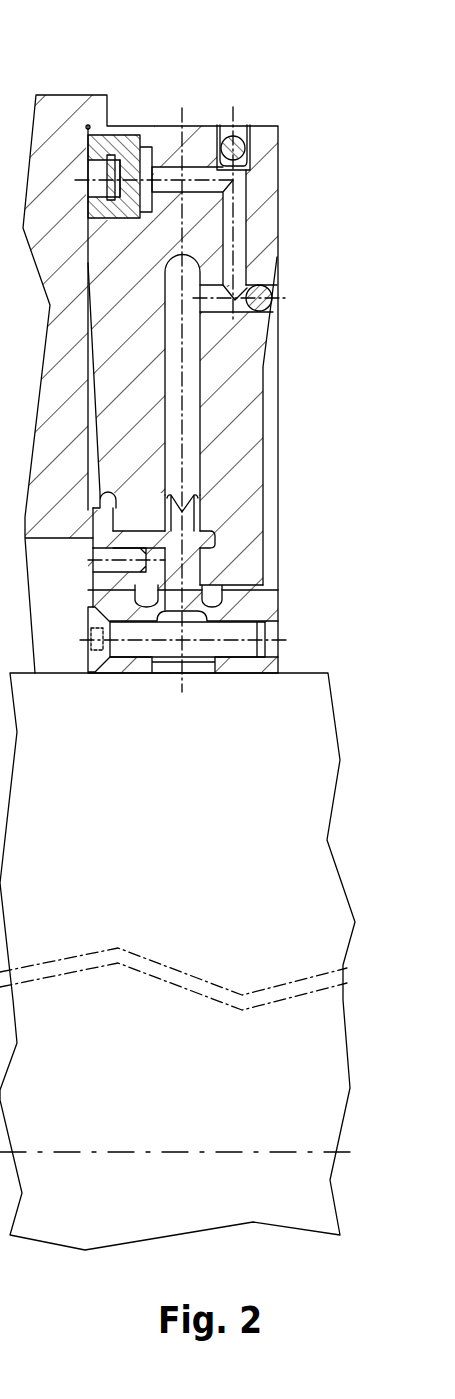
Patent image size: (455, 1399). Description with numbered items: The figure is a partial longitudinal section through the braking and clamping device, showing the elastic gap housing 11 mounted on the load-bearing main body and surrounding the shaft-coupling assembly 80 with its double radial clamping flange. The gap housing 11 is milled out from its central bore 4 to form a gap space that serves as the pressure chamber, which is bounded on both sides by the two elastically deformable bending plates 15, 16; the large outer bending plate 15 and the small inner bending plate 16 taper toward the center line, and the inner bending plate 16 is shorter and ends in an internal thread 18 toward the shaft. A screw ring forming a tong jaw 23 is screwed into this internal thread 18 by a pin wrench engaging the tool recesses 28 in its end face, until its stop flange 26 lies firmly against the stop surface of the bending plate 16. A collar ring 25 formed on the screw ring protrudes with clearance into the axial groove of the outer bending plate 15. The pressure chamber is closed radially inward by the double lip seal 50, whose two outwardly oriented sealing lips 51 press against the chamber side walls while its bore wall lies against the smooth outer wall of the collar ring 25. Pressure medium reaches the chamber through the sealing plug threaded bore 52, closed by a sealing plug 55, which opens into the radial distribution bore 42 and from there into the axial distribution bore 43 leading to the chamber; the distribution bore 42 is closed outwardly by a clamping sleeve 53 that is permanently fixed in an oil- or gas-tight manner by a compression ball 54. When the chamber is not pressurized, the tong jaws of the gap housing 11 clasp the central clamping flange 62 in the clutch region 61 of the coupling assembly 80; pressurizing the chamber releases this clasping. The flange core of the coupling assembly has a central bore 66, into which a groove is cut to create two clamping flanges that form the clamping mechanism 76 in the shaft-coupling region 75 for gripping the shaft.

The central bore 4 is at (216, 583).
The gap housing 11 is at (262, 197).
The bending plate 15 is at (218, 345).
The bending plate 16 is at (143, 384).
The internal thread 18 is at (146, 505).
The tong jaw 23 is at (128, 578).
The collar ring 25 is at (195, 543).
The stop flange 26 is at (100, 528).
The tool recess 28 is at (110, 565).
The radial distribution bore 42 is at (237, 230).
The axial distribution bore 43 is at (212, 291).
The double lip seal 50 is at (188, 523).
The sealing lips 51 is at (137, 530).
The sealing plug threaded bore 52 is at (113, 135).
The clamping sleeve 53 is at (247, 137).
The compression ball 54 is at (228, 135).
The sealing plug 55 is at (127, 150).
The clutch region 61 is at (363, 543).
The clamping flange 62 is at (185, 570).
The central bore 66 is at (250, 672).
The shaft-coupling region 75 is at (363, 641).
The clamping mechanism 76 is at (363, 610).
The shaft-coupling assembly 80 is at (363, 577).